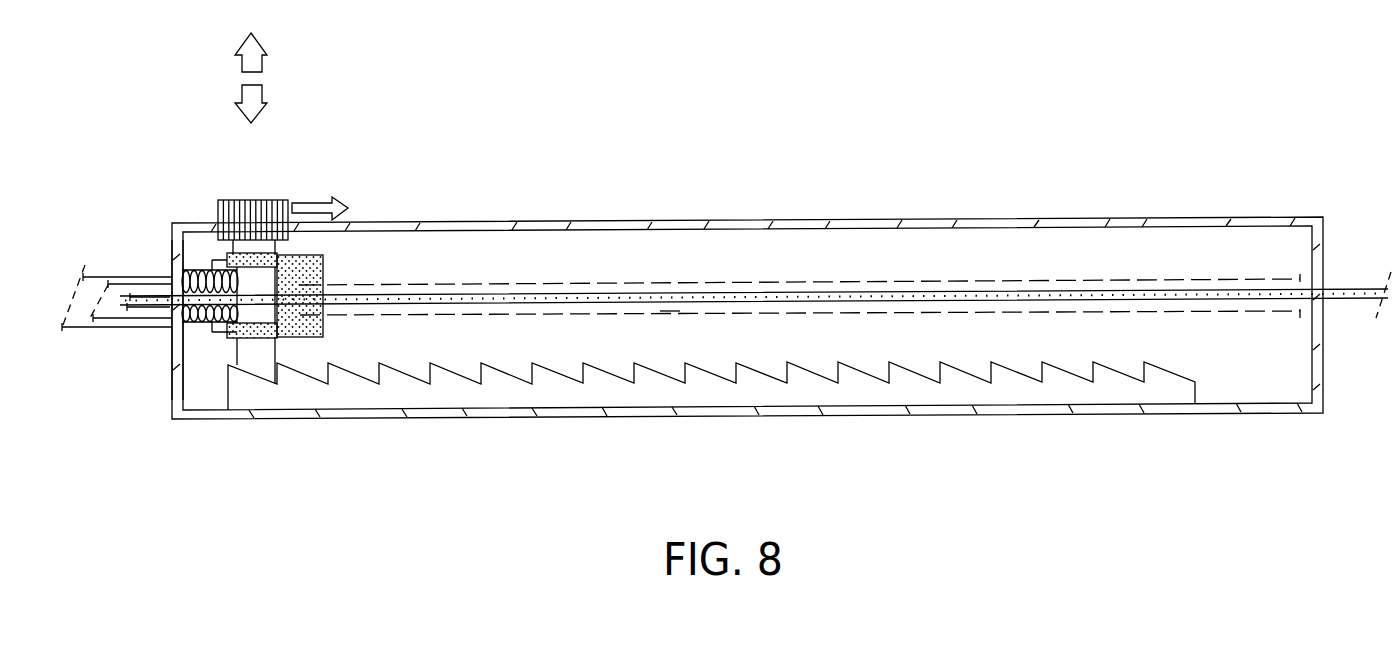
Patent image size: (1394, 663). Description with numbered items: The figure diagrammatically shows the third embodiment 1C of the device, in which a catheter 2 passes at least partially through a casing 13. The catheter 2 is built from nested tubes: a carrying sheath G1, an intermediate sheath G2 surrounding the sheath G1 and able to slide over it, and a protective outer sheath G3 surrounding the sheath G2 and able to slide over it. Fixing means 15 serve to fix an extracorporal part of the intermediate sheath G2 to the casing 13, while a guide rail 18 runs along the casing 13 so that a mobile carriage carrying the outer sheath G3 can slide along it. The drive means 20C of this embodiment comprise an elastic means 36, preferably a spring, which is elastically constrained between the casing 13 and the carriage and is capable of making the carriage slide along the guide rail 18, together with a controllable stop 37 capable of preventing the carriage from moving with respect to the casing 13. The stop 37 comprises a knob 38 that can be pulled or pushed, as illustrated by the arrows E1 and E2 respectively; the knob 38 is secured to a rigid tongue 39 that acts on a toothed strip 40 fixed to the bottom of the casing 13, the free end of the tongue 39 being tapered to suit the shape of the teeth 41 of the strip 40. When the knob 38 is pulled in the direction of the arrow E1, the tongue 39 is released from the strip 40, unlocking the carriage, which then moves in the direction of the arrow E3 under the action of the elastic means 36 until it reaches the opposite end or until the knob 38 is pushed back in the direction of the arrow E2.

The third embodiment 1C is at (715, 252).
The catheter 2 is at (167, 270).
The casing 13 is at (1130, 217).
The fixing means 15 is at (1302, 268).
The guide rail 18 is at (905, 290).
The drive means 20C is at (167, 218).
The elastic means 36 is at (190, 325).
The controllable stop 37 is at (215, 208).
The knob 38 is at (258, 200).
The rigid tongue 39 is at (237, 353).
The toothed strip 40 is at (755, 414).
The teeth 41 is at (358, 372).
The arrow E1 is at (267, 60).
The arrow E2 is at (267, 95).
The arrow E3 is at (312, 200).
The carrying sheath G1 is at (1343, 287).
The intermediate sheath G2 is at (667, 318).
The protective outer sheath G3 is at (86, 328).